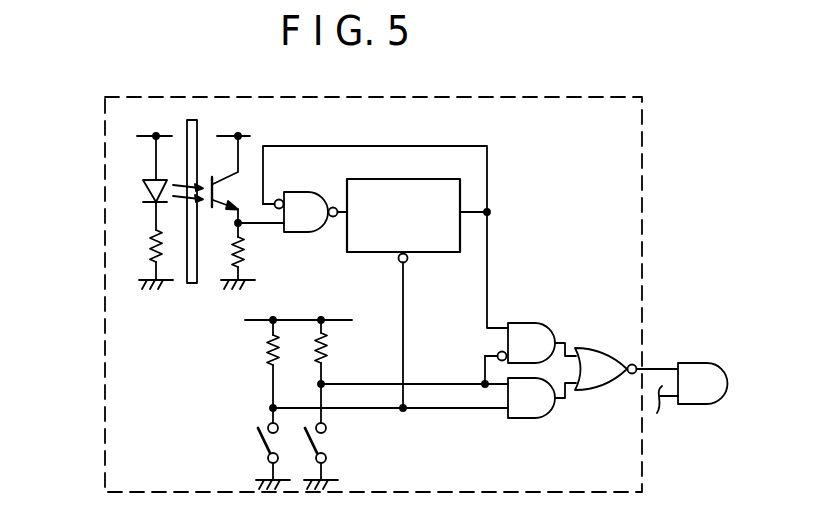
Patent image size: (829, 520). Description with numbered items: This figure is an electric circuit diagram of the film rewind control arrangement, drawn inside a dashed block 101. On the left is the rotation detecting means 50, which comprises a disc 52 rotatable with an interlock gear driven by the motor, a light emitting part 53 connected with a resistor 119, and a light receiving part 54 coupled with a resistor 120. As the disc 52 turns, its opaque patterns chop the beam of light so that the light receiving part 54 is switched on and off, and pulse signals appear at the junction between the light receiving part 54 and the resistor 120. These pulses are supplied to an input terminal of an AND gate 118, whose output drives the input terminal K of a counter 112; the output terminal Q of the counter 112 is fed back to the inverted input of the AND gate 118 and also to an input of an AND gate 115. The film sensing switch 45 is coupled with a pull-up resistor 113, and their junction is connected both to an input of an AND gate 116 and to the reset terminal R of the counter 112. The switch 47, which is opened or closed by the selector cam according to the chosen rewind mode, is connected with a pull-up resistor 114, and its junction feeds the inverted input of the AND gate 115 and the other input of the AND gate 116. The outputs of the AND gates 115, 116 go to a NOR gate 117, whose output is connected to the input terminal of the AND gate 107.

The film sensing switch 45 is at (258, 440).
The switch 47 is at (322, 442).
The rotation detecting means 50 is at (181, 133).
The disc 52 is at (200, 130).
The light emitting part 53 is at (143, 192).
The light receiving part 54 is at (223, 189).
The control circuit 101 is at (583, 98).
The AND gate 107 is at (698, 363).
The counter 112 is at (443, 177).
The pull-up resistor 113 is at (267, 350).
The pull-up resistor 114 is at (323, 350).
The AND gate 115 is at (532, 323).
The AND gate 116 is at (533, 418).
The NOR gate 117 is at (593, 348).
The AND gate 118 is at (308, 228).
The resistor 119 is at (143, 248).
The resistor 120 is at (245, 250).